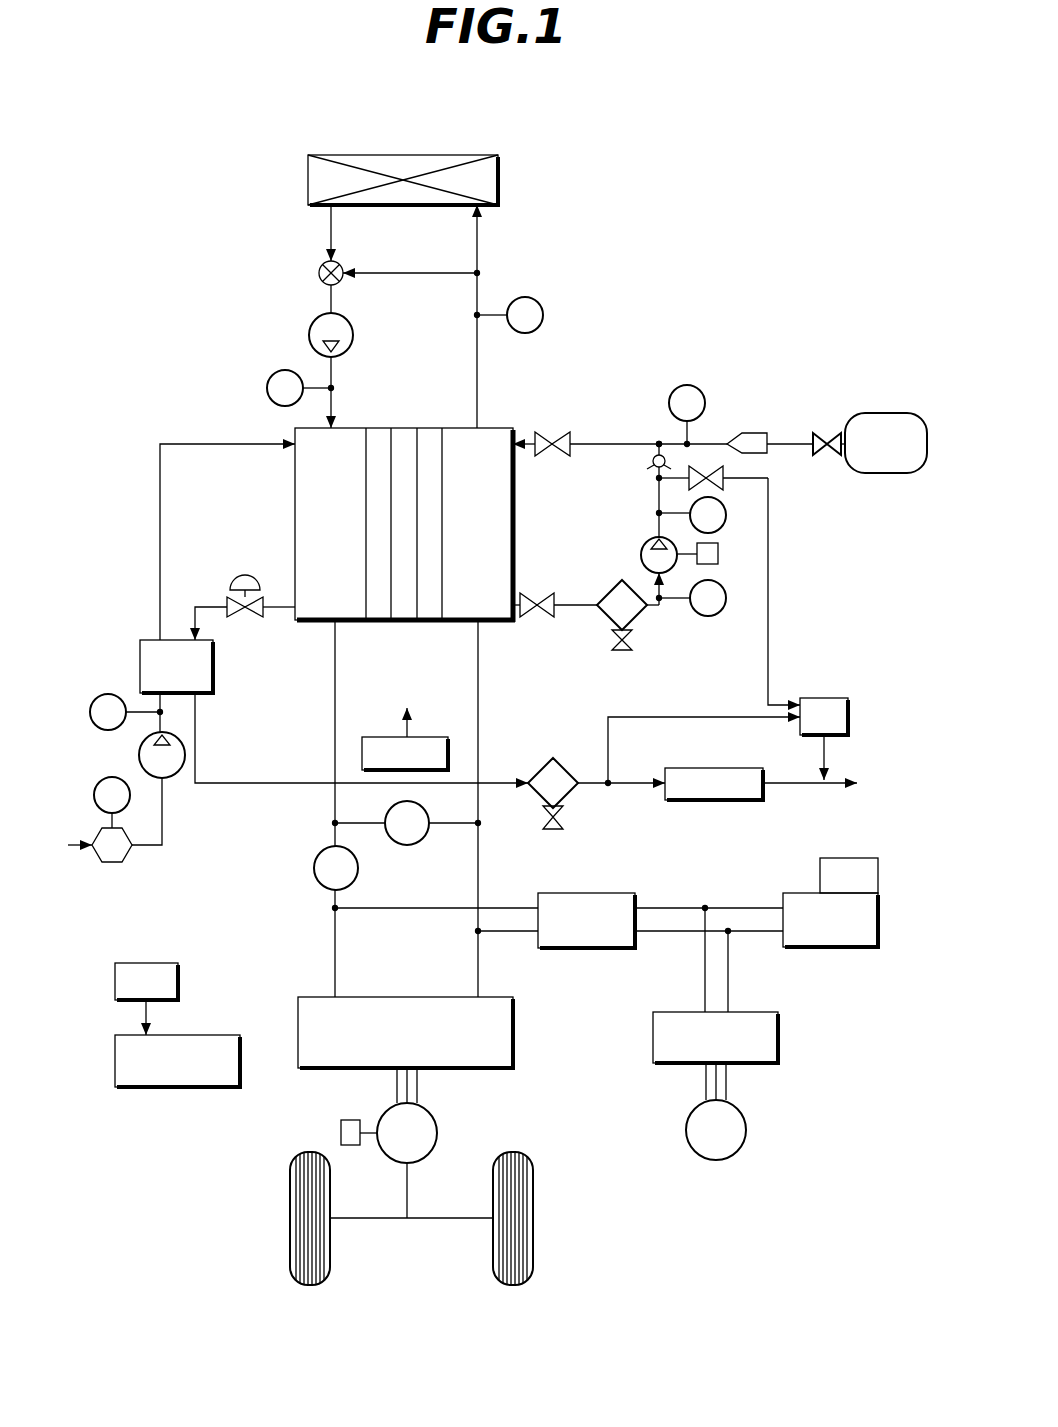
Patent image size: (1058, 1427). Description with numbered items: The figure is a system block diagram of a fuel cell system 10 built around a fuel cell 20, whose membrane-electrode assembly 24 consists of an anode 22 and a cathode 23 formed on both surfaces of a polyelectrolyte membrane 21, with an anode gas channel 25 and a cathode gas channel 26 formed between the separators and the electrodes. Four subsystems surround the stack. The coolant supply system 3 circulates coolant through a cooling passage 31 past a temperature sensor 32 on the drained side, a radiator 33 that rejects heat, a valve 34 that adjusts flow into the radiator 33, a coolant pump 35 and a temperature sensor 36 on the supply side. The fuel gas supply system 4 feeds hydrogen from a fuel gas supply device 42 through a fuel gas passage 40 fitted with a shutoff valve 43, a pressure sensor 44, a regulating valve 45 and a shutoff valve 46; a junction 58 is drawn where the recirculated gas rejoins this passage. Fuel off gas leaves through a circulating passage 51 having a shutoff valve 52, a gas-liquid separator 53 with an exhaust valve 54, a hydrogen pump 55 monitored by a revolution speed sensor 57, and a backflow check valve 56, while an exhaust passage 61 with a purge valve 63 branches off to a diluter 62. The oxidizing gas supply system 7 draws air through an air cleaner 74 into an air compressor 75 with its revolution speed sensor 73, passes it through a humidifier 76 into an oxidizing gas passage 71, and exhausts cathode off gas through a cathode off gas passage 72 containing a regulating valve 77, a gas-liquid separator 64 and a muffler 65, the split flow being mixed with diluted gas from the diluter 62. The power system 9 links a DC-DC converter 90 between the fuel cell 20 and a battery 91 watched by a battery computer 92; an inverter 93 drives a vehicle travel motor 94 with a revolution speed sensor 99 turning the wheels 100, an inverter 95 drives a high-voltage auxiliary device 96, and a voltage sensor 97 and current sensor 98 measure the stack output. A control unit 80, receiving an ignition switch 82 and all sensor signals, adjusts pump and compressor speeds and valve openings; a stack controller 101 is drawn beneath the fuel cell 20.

The fuel cell system 10 is at (738, 209).
The coolant supply system 3 is at (412, 344).
The fuel gas supply system 4 is at (551, 504).
The oxidizing gas supply system 7 is at (198, 492).
The power system 9 is at (414, 969).
The fuel cell 20 is at (408, 428).
The polyelectrolyte membrane 21 is at (400, 620).
The anode 22 is at (442, 620).
The cathode 23 is at (370, 620).
The membrane-electrode assembly 24 is at (458, 670).
The anode gas channel 25 is at (495, 625).
The cathode gas channel 26 is at (315, 625).
The cooling passage 31 is at (477, 370).
The temperature sensor 32 is at (530, 297).
The radiator 33 is at (498, 183).
The valve 34 is at (320, 266).
The coolant pump 35 is at (310, 328).
The temperature sensor 36 is at (272, 375).
The fuel gas passage 40 is at (620, 444).
The fuel gas supply device 42 is at (878, 420).
The shutoff valve 43 is at (816, 432).
The pressure sensor 44 is at (675, 390).
The regulating valve 45 is at (745, 433).
The shutoff valve 46 is at (548, 432).
The circulating passage 51 is at (572, 607).
The shutoff valve 52 is at (545, 595).
The gas-liquid separator 53 is at (610, 590).
The exhaust valve 54 is at (622, 652).
The hydrogen pump 55 is at (645, 545).
The backflow check valve 56 is at (652, 466).
The revolution speed sensor 57 is at (718, 560).
The junction 58 is at (659, 428).
The exhaust passage 61 is at (768, 548).
The diluter 62 is at (830, 698).
The purge valve 63 is at (723, 475).
The gas-liquid separator 64 is at (575, 803).
The muffler 65 is at (730, 802).
The oxidizing gas passage 71 is at (178, 444).
The cathode off gas passage 72 is at (285, 605).
The revolution speed sensor 73 is at (100, 695).
The air cleaner 74 is at (112, 862).
The air compressor 75 is at (172, 778).
The humidifier 76 is at (145, 640).
The regulating valve 77 is at (240, 576).
The control unit 80 is at (195, 1035).
The ignition switch 82 is at (178, 970).
The DC-DC converter 90 is at (550, 893).
The battery 91 is at (793, 893).
The battery computer 92 is at (855, 858).
The inverter 93 is at (513, 1030).
The vehicle travel motor 94 is at (437, 1128).
The inverter 95 is at (778, 1035).
The high-voltage auxiliary device 96 is at (746, 1130).
The voltage sensor 97 is at (415, 845).
The current sensor 98 is at (358, 868).
The revolution speed sensor 99 is at (341, 1135).
The wheels 100 is at (533, 1180).
The stack controller 101 is at (425, 737).